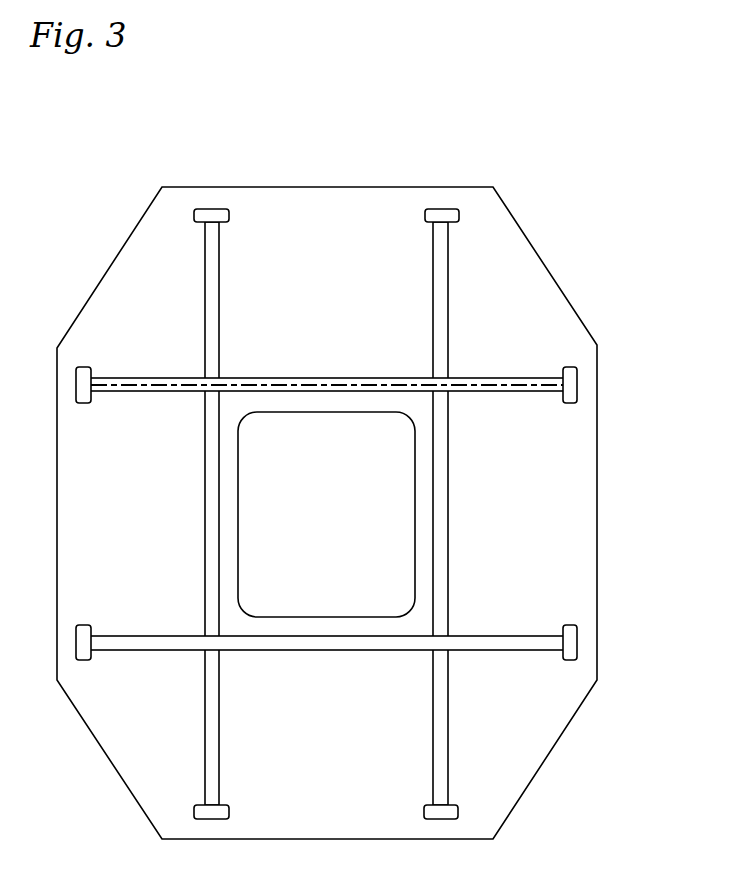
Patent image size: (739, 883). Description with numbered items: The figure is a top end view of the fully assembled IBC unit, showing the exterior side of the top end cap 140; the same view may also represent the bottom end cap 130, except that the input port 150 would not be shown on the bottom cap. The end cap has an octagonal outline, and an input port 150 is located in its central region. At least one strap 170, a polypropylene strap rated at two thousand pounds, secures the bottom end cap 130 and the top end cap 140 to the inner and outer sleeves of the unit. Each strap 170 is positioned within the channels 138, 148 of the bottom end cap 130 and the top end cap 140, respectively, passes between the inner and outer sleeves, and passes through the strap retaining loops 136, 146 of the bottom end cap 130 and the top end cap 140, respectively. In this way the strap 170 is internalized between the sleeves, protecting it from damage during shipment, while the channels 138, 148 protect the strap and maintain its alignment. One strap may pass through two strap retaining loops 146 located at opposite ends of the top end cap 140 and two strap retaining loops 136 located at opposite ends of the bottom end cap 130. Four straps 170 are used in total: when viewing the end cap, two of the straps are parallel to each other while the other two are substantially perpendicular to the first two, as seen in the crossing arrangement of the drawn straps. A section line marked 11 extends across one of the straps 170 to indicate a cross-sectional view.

The section line 11- 11 is at (87, 385).
The bottom end cap 130 is at (344, 513).
The top end cap 140 is at (515, 248).
The strap retaining loops 136 is at (376, 540).
The strap retaining loops 146 is at (440, 820).
The channels 138 is at (368, 551).
The channels 148 is at (368, 551).
The input port 150 is at (392, 477).
The strap 170 is at (518, 642).